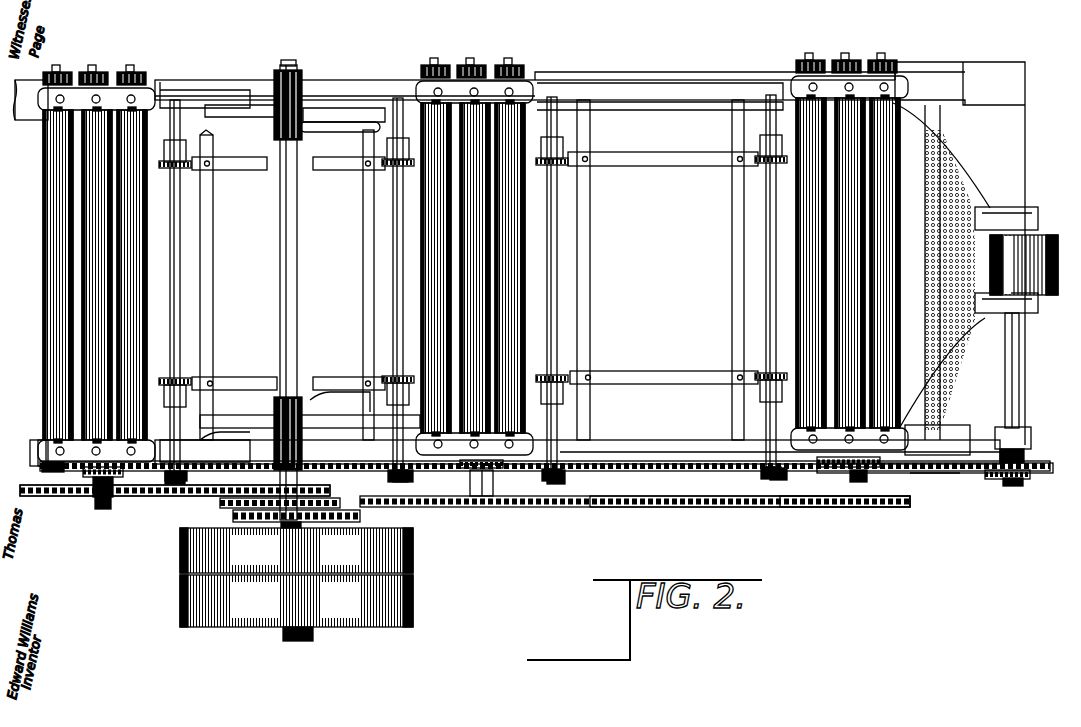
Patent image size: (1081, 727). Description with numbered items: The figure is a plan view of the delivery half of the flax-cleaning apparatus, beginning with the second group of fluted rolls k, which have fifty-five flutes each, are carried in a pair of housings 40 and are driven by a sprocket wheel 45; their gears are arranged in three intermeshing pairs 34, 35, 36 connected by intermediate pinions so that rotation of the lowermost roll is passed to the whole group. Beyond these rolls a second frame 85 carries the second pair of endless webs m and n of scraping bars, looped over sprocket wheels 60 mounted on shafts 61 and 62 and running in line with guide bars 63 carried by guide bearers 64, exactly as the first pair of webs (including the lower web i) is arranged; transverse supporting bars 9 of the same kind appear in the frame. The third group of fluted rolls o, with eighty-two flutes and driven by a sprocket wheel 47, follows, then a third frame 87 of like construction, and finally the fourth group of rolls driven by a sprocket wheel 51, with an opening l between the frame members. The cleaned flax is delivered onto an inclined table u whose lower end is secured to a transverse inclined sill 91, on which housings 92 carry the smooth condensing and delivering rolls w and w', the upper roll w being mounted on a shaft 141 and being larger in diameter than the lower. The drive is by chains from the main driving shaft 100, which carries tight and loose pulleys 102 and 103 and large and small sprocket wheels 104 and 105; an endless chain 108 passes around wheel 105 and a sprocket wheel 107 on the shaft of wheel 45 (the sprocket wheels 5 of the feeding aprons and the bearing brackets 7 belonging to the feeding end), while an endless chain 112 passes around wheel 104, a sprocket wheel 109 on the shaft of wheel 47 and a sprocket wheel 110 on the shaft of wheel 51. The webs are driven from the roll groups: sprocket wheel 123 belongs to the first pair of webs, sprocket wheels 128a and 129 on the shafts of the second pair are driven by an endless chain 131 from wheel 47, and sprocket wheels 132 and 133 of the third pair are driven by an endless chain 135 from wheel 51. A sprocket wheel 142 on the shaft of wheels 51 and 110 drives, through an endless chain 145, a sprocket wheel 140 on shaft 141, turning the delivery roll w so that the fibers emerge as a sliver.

The apron carrying-sprocket wheels 5 is at (685, 118).
The bearing brackets 7 is at (608, 123).
The second frame 85 is at (182, 92).
The endless web m is at (231, 137).
The endless web n is at (328, 140).
The pair of gears 34 is at (60, 70).
The pair of gears 35 is at (98, 70).
The pair of gears 36 is at (138, 70).
The second group of fluted rolls k is at (52, 337).
The sprocket wheels 60 is at (191, 166).
The shaft 61 is at (183, 240).
The shaft 62 is at (392, 214).
The guide bars 63 is at (240, 170).
The guide bearers 64 is at (213, 258).
The transverse supporting bars 9 is at (364, 262).
The third group of fluted rolls o is at (362, 296).
The frame opening l is at (722, 302).
The main driving shaft 100 is at (284, 300).
The third frame 87 is at (670, 440).
The sprocket wheel 128a is at (215, 460).
The housing 40 is at (45, 440).
The inclined table u is at (940, 280).
The lower web i is at (978, 368).
The housings 92 is at (996, 207).
The delivery roller w is at (1028, 278).
The delivery roller w' is at (991, 265).
The shaft 141 is at (1020, 386).
The transverse inclined sill 91 is at (948, 412).
The endless chain 135 is at (688, 471).
The sprocket wheel 107 is at (38, 497).
The endless chain 108 is at (153, 497).
The sprocket wheel 109 is at (546, 508).
The endless chain 112 is at (674, 508).
The sprocket wheel 110 is at (836, 508).
The sprocket wheel 142 is at (888, 474).
The sprocket wheel 140 is at (1010, 482).
The endless chain 145 is at (960, 496).
The sprocket wheel 45 is at (90, 480).
The sprocket wheel 123 is at (50, 472).
The endless chain 131 is at (238, 472).
The sprocket wheel 129 is at (408, 478).
The sprocket wheel 132 is at (580, 470).
The sprocket wheel 133 is at (762, 470).
The sprocket wheel 51 is at (830, 468).
The sprocket wheel 47 is at (470, 482).
The small sprocket wheel 105 is at (322, 498).
The large sprocket wheel 104 is at (233, 517).
The tight pulley 102 is at (416, 556).
The loose pulley 103 is at (416, 592).